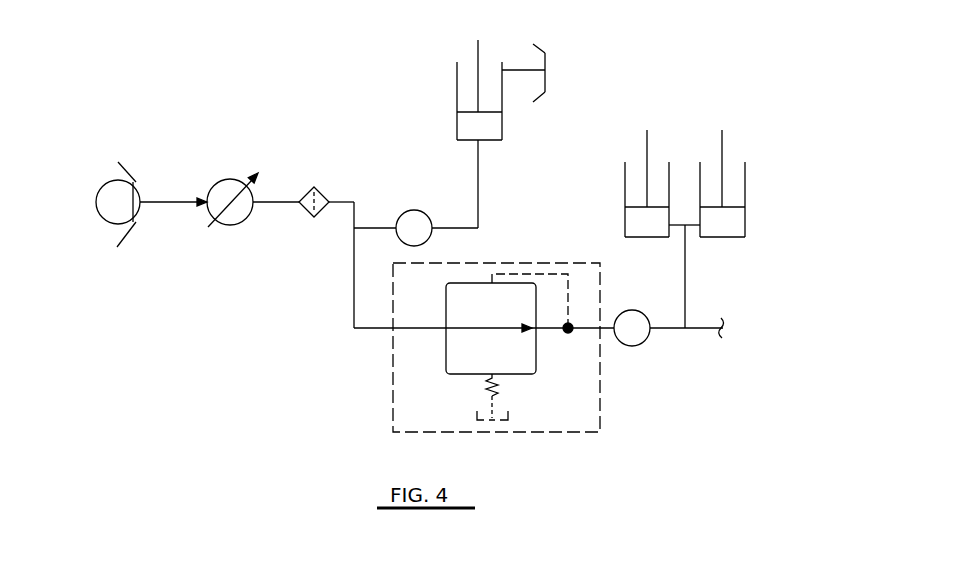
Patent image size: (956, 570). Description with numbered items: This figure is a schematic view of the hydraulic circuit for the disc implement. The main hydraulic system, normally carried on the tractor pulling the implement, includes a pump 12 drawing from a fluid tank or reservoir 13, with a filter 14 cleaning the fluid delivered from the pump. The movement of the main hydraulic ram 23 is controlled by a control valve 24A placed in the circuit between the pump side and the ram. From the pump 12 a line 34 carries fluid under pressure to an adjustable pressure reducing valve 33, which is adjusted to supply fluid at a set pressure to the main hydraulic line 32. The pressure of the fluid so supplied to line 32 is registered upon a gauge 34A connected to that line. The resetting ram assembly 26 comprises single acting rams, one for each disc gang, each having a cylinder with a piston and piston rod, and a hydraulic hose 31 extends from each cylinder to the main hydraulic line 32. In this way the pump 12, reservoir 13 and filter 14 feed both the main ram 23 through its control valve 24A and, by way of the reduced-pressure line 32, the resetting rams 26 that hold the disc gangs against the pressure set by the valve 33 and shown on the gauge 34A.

The pump 12 is at (230, 180).
The fluid tank or reservoir 13 is at (134, 190).
The filter 14 is at (313, 187).
The main hydraulic ram 23 is at (514, 118).
The control valve 24A is at (416, 210).
The resetting ram assembly 26 is at (615, 184).
The hydraulic hose 31 is at (685, 290).
The main hydraulic line 32 is at (354, 312).
The adjustable pressure reducing valve 33 is at (384, 416).
The line 34 is at (354, 247).
The gauge 34A is at (645, 343).